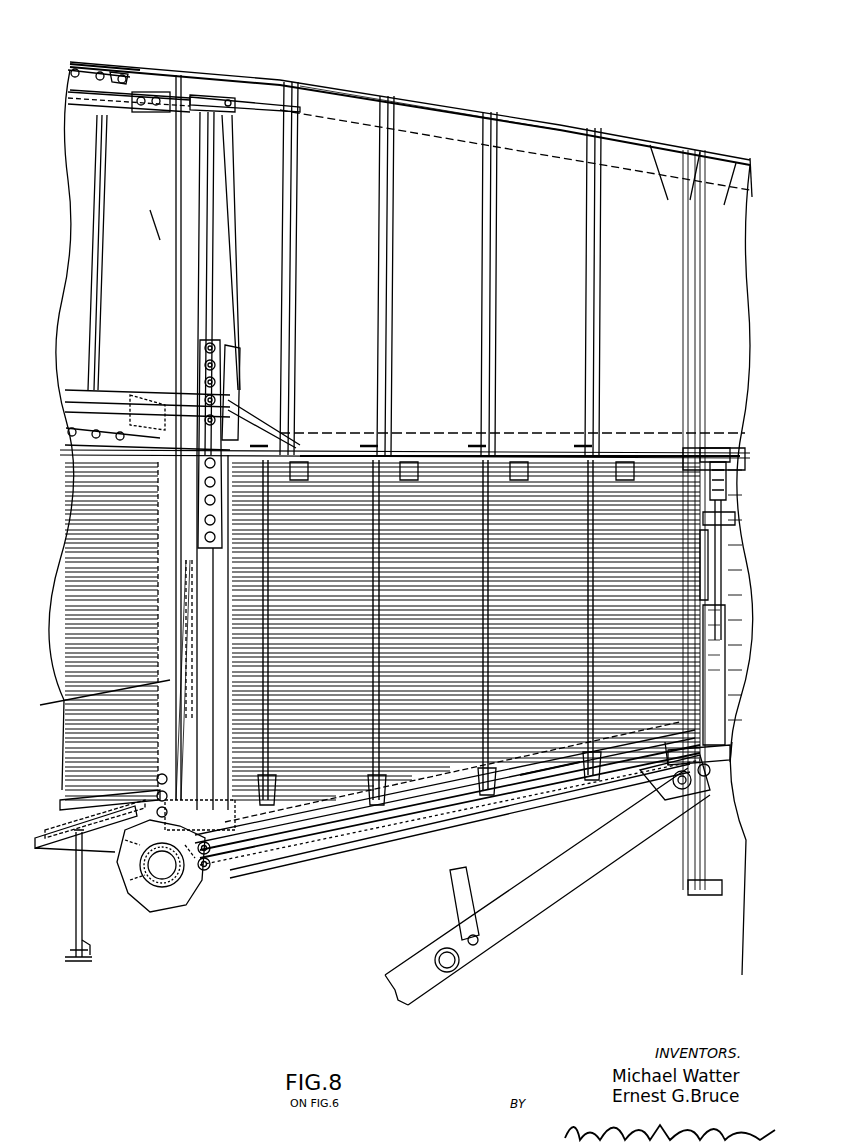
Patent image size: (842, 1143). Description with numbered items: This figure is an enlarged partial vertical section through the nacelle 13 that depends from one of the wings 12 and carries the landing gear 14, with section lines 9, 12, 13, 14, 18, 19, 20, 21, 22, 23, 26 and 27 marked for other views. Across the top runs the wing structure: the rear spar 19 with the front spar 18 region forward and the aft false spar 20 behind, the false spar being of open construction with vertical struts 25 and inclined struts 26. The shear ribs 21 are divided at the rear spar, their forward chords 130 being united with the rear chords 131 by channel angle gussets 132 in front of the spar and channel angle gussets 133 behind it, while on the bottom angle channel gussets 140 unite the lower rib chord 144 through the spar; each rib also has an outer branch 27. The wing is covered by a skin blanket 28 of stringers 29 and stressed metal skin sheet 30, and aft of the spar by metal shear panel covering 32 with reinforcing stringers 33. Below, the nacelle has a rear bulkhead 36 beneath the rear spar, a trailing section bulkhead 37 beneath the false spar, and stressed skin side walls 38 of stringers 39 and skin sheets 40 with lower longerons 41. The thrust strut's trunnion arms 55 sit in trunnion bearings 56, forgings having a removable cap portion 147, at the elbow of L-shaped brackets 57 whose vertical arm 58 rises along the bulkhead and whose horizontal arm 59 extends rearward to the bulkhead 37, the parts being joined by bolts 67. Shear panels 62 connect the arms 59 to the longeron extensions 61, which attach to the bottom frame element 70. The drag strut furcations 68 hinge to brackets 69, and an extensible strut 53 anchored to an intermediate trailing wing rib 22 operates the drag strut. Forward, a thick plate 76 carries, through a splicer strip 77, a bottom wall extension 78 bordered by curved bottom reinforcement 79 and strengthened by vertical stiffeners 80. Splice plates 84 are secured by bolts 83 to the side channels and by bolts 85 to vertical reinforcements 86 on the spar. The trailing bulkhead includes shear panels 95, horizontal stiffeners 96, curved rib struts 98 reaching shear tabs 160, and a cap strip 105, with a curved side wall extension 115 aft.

The section line 9- 9 is at (15, 622).
The wings 12 is at (262, 70).
The nacelle 13 is at (640, 135).
The landing gear 14 is at (729, 418).
The front spar 18 is at (128, 110).
The rear spar 19 is at (232, 130).
The aft false spar 20 is at (158, 80).
The shear ribs 21 is at (77, 146).
The intermediate trailing wing rib 22 is at (122, 500).
The section line 23- 23 is at (213, 340).
The vertical struts 25 is at (700, 336).
The inclined struts 26 is at (128, 915).
The outer branch 27 is at (237, 870).
The skin blanket 28 is at (73, 62).
The stringers 29 is at (124, 70).
The stressed metal skin sheet 30 is at (84, 62).
The metal shear panel covering 32 is at (585, 135).
The reinforcing stringers 33 is at (380, 450).
The rear bulkhead 36 is at (158, 738).
The trailing section bulkhead 37 is at (725, 562).
The stressed skin side walls 38 is at (425, 760).
The stringers 39 is at (222, 610).
The skin sheets 40 is at (222, 660).
The lower longerons 41 is at (60, 812).
The extensible strut 53 is at (467, 885).
The trunnion arms 55 is at (165, 888).
The trunnion bearings 56 is at (146, 905).
The L-shaped brackets 57 is at (312, 858).
The vertical arm 58 is at (96, 698).
The horizontal arm 59 is at (360, 848).
The longeron extensions 61 is at (500, 795).
The shear panels 62 is at (465, 800).
The bolts 67 is at (162, 770).
The furcations 68 is at (515, 925).
The brackets 69 is at (700, 778).
The bottom frame element 70 is at (732, 750).
The thick plate 76 is at (60, 828).
The splicer strip 77 is at (70, 840).
The bottom wall extension 78 is at (76, 912).
The curved bottom reinforcement 79 is at (72, 963).
The vertical stiffeners 80 is at (88, 945).
The bolts 83 is at (236, 440).
The splice plates 84 is at (236, 392).
The bolts 85 is at (216, 365).
The vertical reinforcements 86 is at (216, 232).
The shear panels 95 is at (710, 535).
The horizontal stiffeners 96 is at (735, 515).
The curved rib struts 98 is at (726, 480).
The cap strip 105 is at (730, 455).
The curved side wall extension 115 is at (708, 892).
The chords 130 is at (75, 96).
The chords 131 is at (445, 112).
The channel angle gussets 132 is at (150, 112).
The channel angle gussets 133 is at (248, 95).
The angle channel gussets 140 is at (130, 411).
The lower rib chord 144 is at (498, 448).
The removable cap portion 147 is at (175, 905).
The shear tabs 160 is at (520, 448).